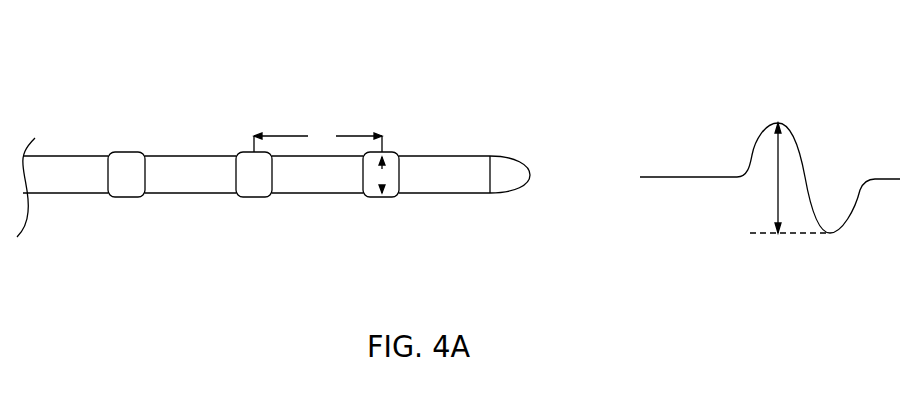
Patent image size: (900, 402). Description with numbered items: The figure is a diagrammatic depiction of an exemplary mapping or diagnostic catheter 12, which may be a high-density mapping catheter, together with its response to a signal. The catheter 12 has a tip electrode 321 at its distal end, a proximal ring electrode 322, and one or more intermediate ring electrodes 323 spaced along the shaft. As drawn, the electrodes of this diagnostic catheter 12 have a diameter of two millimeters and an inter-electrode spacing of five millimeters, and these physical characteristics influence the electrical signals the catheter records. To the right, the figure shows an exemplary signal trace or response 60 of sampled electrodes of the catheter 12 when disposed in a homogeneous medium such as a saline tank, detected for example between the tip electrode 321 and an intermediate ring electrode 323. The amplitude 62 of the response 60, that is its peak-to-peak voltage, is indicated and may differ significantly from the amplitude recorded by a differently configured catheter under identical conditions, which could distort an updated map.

The catheter 12 is at (287, 99).
The tip electrode 321 is at (502, 162).
The proximal ring electrode 322 is at (126, 152).
The intermediate ring electrode 323 is at (264, 197).
The signal trace/response 60 is at (806, 153).
The amplitude 62 is at (778, 187).